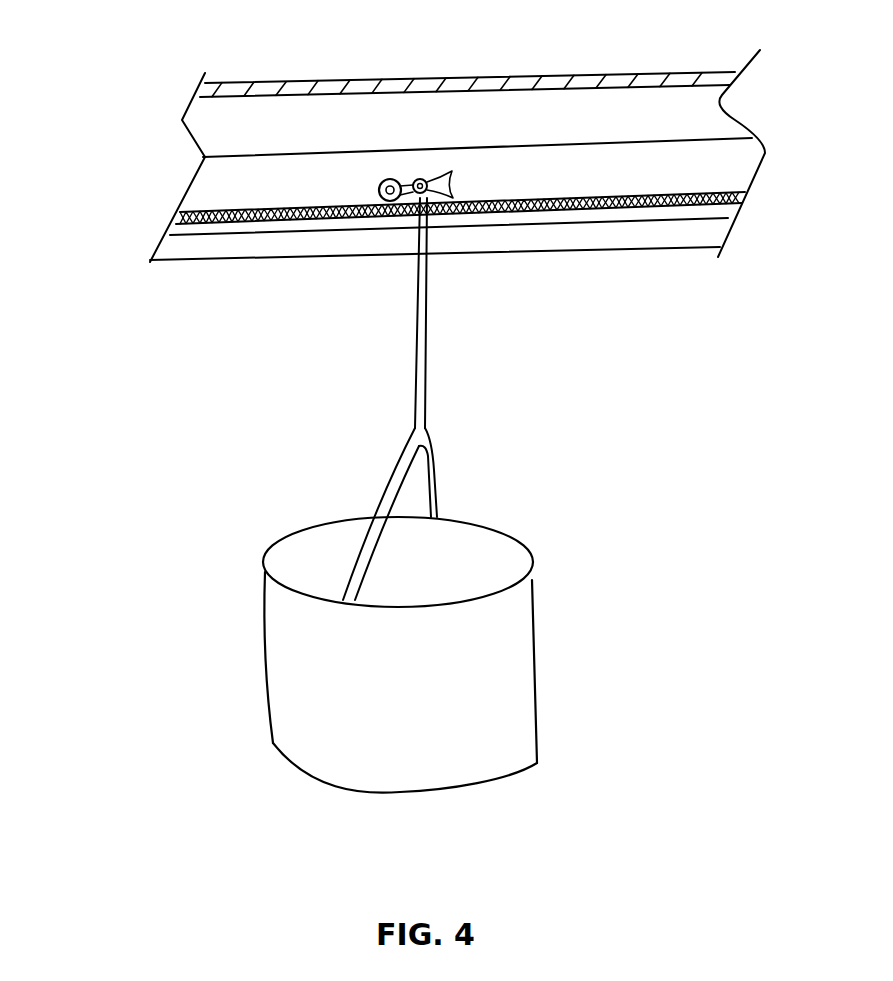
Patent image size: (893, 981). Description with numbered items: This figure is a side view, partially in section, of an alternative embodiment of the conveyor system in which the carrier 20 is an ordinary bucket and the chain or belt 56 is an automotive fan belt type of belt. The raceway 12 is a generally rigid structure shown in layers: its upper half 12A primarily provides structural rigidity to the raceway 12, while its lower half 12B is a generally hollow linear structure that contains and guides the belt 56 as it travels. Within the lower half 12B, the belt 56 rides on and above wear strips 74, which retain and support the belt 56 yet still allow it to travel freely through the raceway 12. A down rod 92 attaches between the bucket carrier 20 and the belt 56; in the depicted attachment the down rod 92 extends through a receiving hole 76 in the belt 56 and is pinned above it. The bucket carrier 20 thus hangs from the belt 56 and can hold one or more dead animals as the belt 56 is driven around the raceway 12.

The raceway 12 is at (343, 83).
The upper half of raceway 12A is at (210, 130).
The lower half of raceway 12B is at (210, 186).
The chain or belt 56 is at (185, 218).
The wear strips 74 is at (173, 233).
The receiving hole 76 is at (428, 209).
The down rod 92 is at (413, 343).
The carrier 20 is at (228, 641).